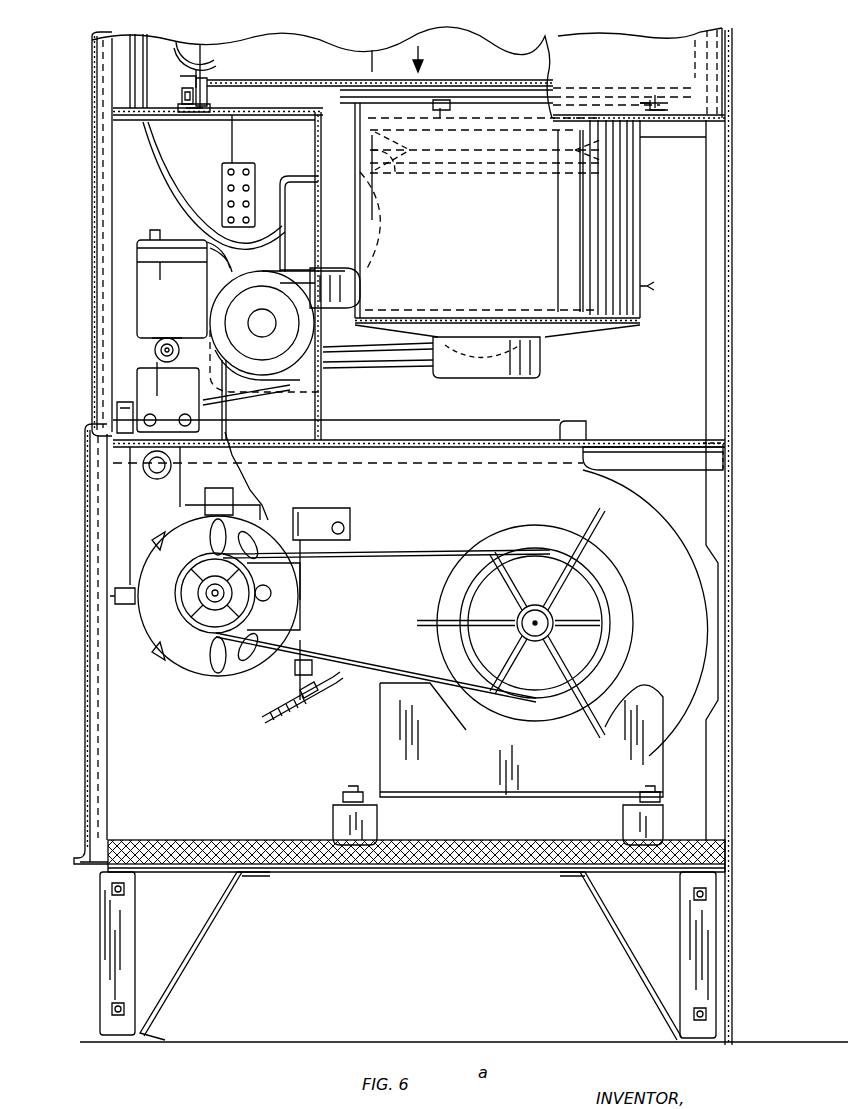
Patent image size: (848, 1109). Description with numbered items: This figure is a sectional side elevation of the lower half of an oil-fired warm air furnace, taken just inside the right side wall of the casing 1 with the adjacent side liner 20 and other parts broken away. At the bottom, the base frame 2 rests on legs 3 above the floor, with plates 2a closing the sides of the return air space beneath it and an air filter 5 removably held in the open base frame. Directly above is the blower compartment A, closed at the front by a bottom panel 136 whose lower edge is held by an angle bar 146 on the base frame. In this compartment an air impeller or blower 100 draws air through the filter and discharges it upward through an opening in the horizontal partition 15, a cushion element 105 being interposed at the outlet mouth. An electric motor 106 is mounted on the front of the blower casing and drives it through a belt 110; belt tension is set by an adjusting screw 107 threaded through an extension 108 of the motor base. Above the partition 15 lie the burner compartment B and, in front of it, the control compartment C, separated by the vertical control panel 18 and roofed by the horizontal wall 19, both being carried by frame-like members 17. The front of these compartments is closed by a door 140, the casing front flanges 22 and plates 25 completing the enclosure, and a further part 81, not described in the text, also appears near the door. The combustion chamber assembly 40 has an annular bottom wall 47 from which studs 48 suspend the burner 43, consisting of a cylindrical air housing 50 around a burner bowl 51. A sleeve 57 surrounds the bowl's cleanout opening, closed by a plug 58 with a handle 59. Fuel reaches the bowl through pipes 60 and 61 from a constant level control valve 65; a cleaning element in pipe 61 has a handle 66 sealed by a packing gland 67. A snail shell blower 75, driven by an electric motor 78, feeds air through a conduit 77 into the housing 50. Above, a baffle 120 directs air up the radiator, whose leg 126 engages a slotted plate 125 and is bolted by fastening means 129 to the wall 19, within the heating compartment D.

The casing 1 is at (746, 376).
The base frame 2 is at (318, 868).
The plates 2a is at (78, 918).
The legs 3 is at (110, 972).
The air filter 5 is at (232, 840).
The horizontal partition 15 is at (636, 438).
The frame-like members 17 is at (290, 122).
The control panel 18 is at (318, 338).
The horizontal wall 19 is at (220, 120).
The side liners 20 is at (722, 76).
The flanges 22 is at (112, 208).
The plates 25 is at (660, 140).
The combustion chamber assembly 40 is at (418, 46).
The burner 43 is at (648, 286).
The annular bottom wall 47 is at (180, 55).
The studs 48 is at (446, 106).
The air housing 50 is at (628, 242).
The burner bowl 51 is at (640, 202).
The sleeve 57 is at (372, 184).
The plug 58 is at (310, 162).
The handle 59 is at (278, 258).
The pipe 60 is at (270, 396).
The pipe 61 is at (380, 368).
The constant level control valve 65 is at (178, 301).
The handle 66 is at (194, 366).
The packing gland 67 is at (250, 400).
The air impeller or blower 75 is at (200, 320).
The conduit 77 is at (336, 268).
The electric motor 78 is at (270, 305).
The hinge 81 is at (207, 74).
The air impeller or blower 100 is at (468, 521).
The cushion element 105 is at (574, 424).
The electric motor 106 is at (208, 672).
The adjusting screw 107 is at (300, 710).
The extension 108 is at (305, 690).
The belt 110 is at (406, 548).
The baffle 120 is at (266, 68).
The slotted plate 125 is at (186, 74).
The leg 126 is at (213, 98).
The fastening means 129 is at (182, 92).
The bottom panel 136 is at (85, 640).
The door 140 is at (92, 326).
The angle bar 146 is at (85, 866).
The blower compartment A is at (690, 505).
The burner compartment B is at (688, 262).
The control compartment C is at (130, 188).
The heating compartment D is at (258, 48).